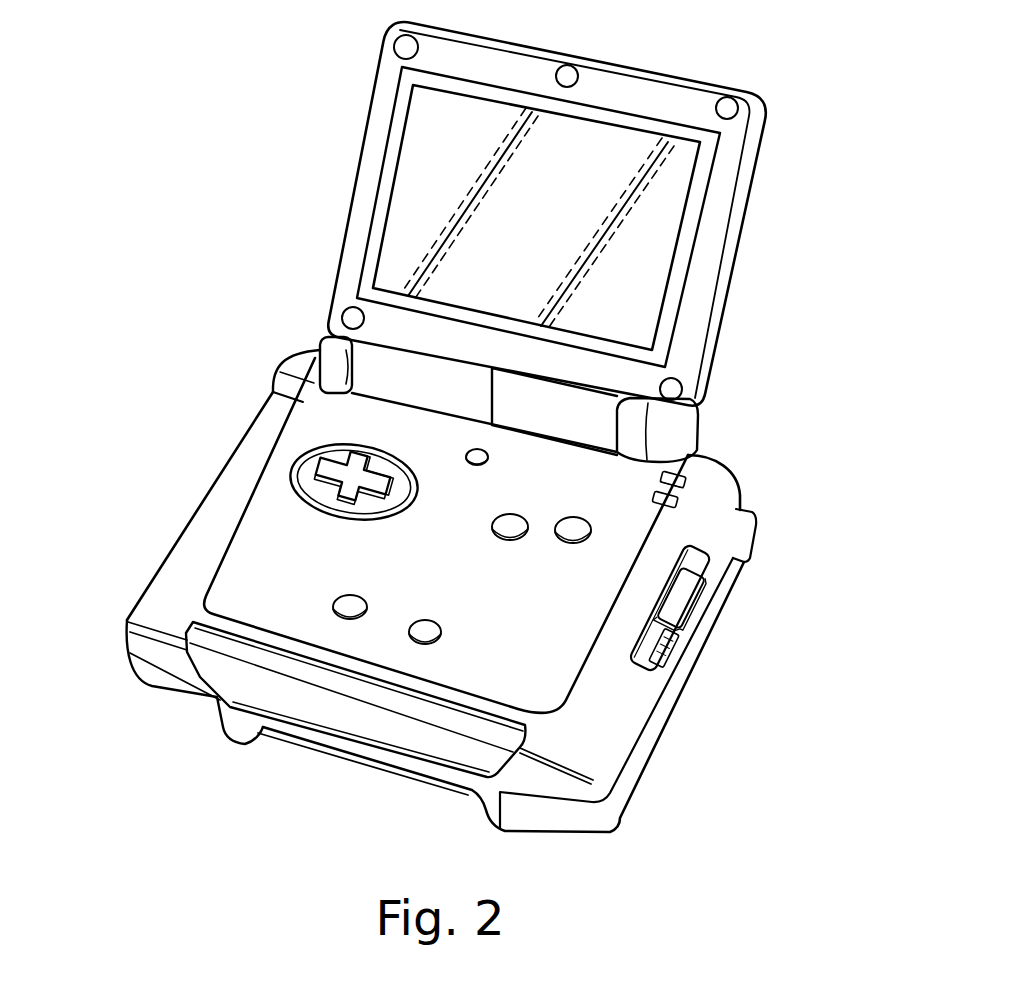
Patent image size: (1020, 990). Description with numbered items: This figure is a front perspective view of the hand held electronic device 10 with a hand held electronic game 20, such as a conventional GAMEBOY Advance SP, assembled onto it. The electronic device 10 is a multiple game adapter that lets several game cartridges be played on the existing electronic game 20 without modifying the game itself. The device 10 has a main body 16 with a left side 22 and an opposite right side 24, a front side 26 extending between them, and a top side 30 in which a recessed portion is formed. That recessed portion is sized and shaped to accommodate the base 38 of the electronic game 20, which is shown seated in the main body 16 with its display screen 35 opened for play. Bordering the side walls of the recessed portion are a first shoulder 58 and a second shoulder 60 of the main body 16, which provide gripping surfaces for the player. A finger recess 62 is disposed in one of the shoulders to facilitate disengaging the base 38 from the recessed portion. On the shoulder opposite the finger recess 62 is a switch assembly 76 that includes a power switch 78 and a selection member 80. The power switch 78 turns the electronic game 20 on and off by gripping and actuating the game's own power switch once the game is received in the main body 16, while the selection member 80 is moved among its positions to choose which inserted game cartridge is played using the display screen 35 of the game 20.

The hand held electronic device 10 is at (196, 402).
The main body 16 is at (184, 503).
The hand held electronic game 20 is at (762, 226).
The left side 22 is at (143, 588).
The right side 24 is at (583, 745).
The front side 26 is at (338, 743).
The top side 30 is at (236, 562).
The display screen 35 is at (596, 150).
The base 38 is at (620, 492).
The first shoulder 58 is at (241, 470).
The second shoulder 60 is at (622, 755).
The finger recess 62 is at (276, 408).
The switch assembly 76 is at (708, 635).
The power switch 78 is at (664, 655).
The selection member 80 is at (712, 588).